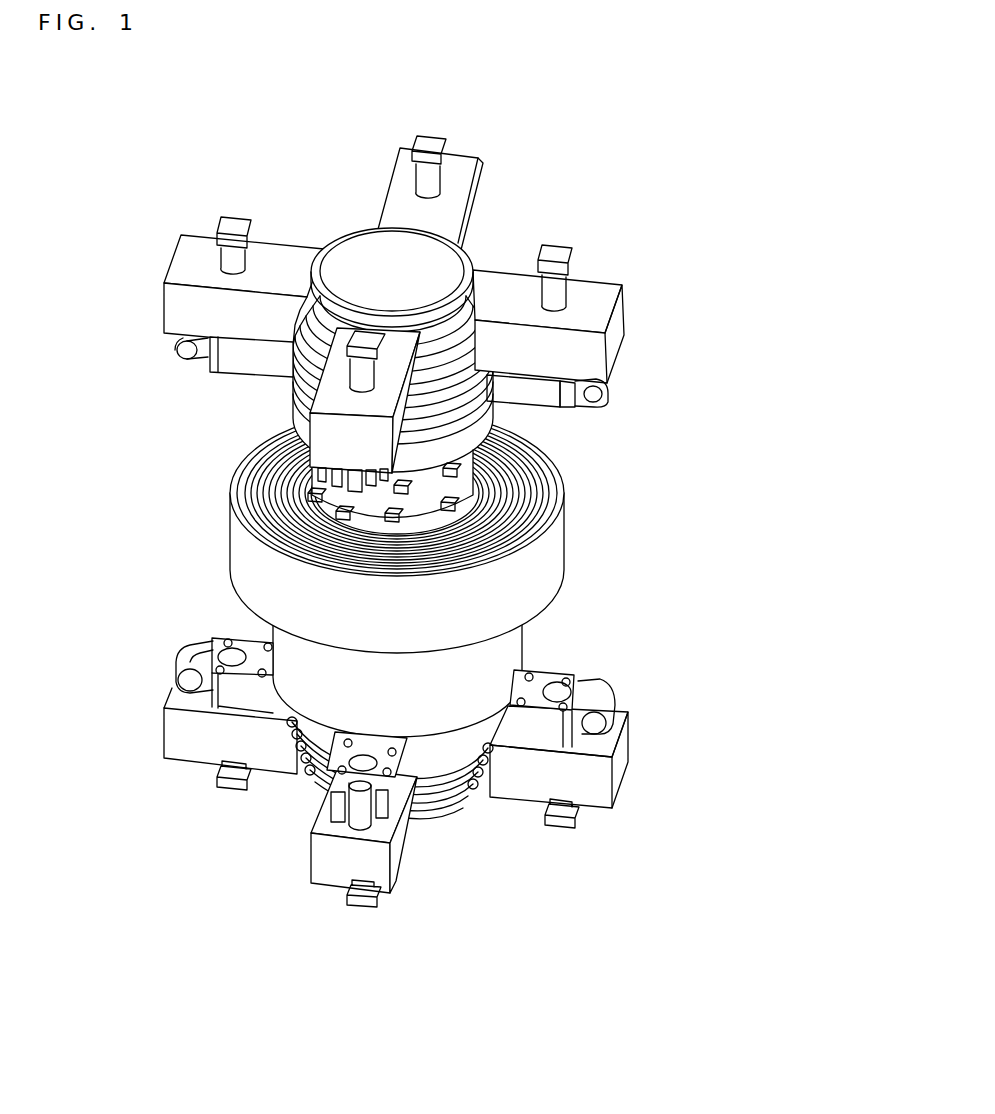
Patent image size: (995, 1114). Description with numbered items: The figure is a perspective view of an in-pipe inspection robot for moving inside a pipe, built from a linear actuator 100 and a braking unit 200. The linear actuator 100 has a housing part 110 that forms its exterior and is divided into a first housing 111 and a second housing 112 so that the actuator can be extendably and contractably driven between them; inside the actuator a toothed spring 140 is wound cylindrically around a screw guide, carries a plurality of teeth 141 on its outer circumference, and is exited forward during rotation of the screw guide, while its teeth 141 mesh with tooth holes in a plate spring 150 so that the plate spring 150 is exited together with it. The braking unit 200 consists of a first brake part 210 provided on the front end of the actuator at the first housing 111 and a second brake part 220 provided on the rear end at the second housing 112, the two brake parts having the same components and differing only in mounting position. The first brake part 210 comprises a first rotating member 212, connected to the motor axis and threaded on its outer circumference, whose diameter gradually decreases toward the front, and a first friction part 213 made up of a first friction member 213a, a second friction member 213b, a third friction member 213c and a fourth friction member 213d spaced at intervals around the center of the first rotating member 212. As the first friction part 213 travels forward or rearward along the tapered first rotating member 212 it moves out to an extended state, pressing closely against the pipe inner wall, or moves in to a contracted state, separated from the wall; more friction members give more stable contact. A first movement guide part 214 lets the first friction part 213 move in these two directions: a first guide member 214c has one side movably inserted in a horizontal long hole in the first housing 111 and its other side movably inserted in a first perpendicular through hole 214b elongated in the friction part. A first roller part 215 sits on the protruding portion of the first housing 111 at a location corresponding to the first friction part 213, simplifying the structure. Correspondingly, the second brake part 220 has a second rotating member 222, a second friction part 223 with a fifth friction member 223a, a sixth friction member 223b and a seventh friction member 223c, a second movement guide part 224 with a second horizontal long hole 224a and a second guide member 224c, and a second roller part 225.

The linear actuator 100 is at (416, 498).
The housing part 110 is at (392, 562).
The first housing 111 is at (393, 389).
The second housing 112 is at (505, 656).
The toothed spring 140 is at (473, 493).
The teeth 141 is at (458, 502).
The plate spring 150 is at (246, 478).
The braking unit 200 is at (398, 522).
The first brake part 210 is at (397, 276).
The first rotating member 212 is at (357, 247).
The first friction part 213 is at (397, 318).
The first friction member 213a is at (172, 313).
The second friction member 213b is at (328, 434).
The third friction member 213c is at (617, 333).
The fourth friction member 213d is at (477, 197).
The first movement guide part 214 is at (422, 226).
The first perpendicular through hole 214b is at (232, 262).
The first guide member 214c is at (228, 224).
The first roller part 215 is at (176, 347).
The second brake part 220 is at (405, 772).
The second rotating member 222 is at (447, 812).
The second friction part 223 is at (401, 822).
The fifth friction member 223a is at (163, 733).
The sixth friction member 223b is at (330, 873).
The seventh friction member 223c is at (622, 780).
The second movement guide part 224 is at (417, 772).
The second horizontal long hole 224a is at (231, 652).
The second guide member 224c is at (257, 656).
The second roller part 225 is at (177, 660).